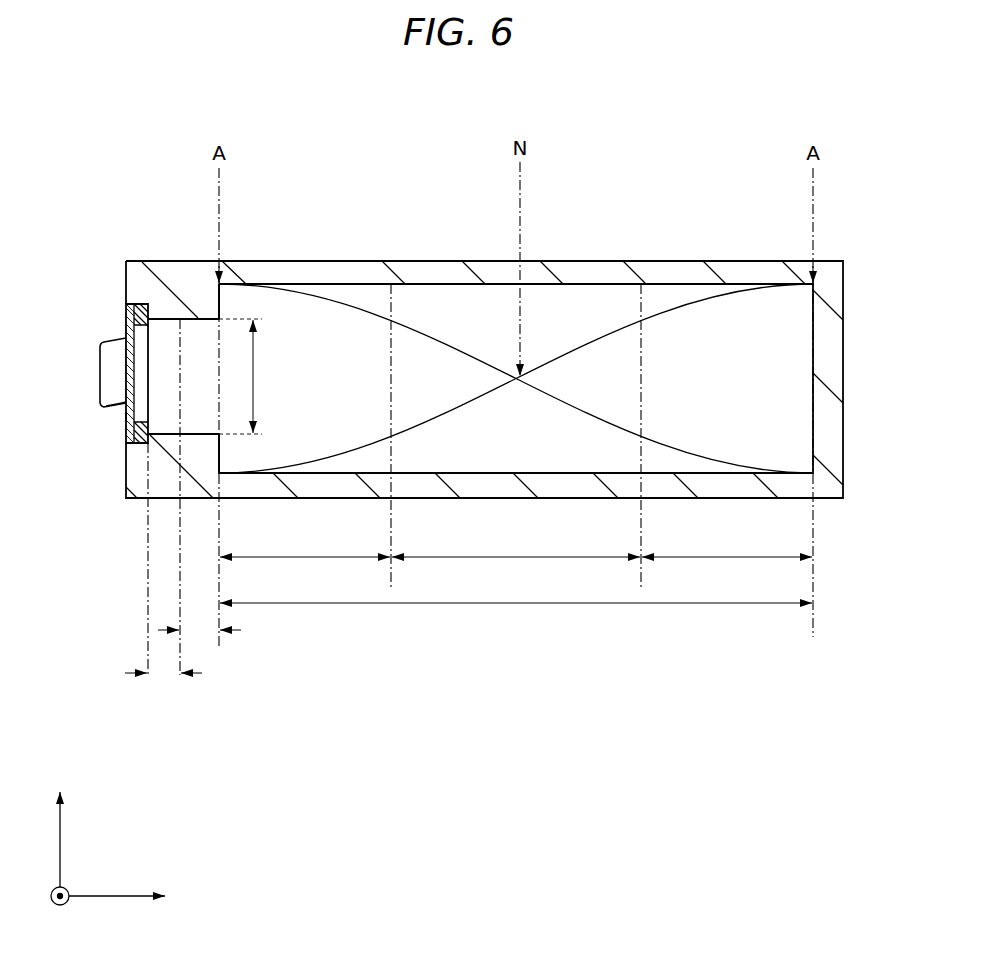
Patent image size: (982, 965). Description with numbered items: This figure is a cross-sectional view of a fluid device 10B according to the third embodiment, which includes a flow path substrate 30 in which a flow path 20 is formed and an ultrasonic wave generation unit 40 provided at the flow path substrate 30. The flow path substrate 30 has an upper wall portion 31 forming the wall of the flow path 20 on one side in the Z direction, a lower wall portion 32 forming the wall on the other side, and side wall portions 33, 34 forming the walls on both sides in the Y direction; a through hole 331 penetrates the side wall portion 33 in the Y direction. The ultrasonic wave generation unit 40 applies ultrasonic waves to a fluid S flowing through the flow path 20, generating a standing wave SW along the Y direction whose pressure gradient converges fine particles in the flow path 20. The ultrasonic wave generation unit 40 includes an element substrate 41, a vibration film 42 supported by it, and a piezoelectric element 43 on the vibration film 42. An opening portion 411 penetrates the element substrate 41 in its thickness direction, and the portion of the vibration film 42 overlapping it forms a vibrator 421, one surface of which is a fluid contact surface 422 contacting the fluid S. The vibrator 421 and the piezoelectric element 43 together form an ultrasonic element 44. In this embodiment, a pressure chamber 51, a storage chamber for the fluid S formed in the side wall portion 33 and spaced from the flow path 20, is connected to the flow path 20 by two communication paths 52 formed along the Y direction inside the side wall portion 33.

The fluid device 10B is at (93, 143).
The flow path 20 is at (447, 286).
The flow path substrate 30 is at (465, 261).
The upper wall portion 31 is at (716, 261).
The lower wall portion 32 is at (735, 490).
The side wall portion 33 is at (137, 472).
The through hole 331 is at (127, 431).
The side wall portion 34 is at (835, 452).
The ultrasonic wave generation unit 40 is at (52, 231).
The element substrate 41 is at (142, 303).
The opening portion 411 is at (146, 333).
The vibration film 42 is at (127, 313).
The vibrator 421 is at (127, 397).
The fluid contact surface 422 is at (125, 417).
The piezoelectric element 43 is at (112, 370).
The ultrasonic element 44 is at (101, 319).
The pressure chamber 51 is at (176, 326).
The communication path 52 is at (209, 326).
The fluid S is at (563, 316).
The standing wave SW is at (348, 303).